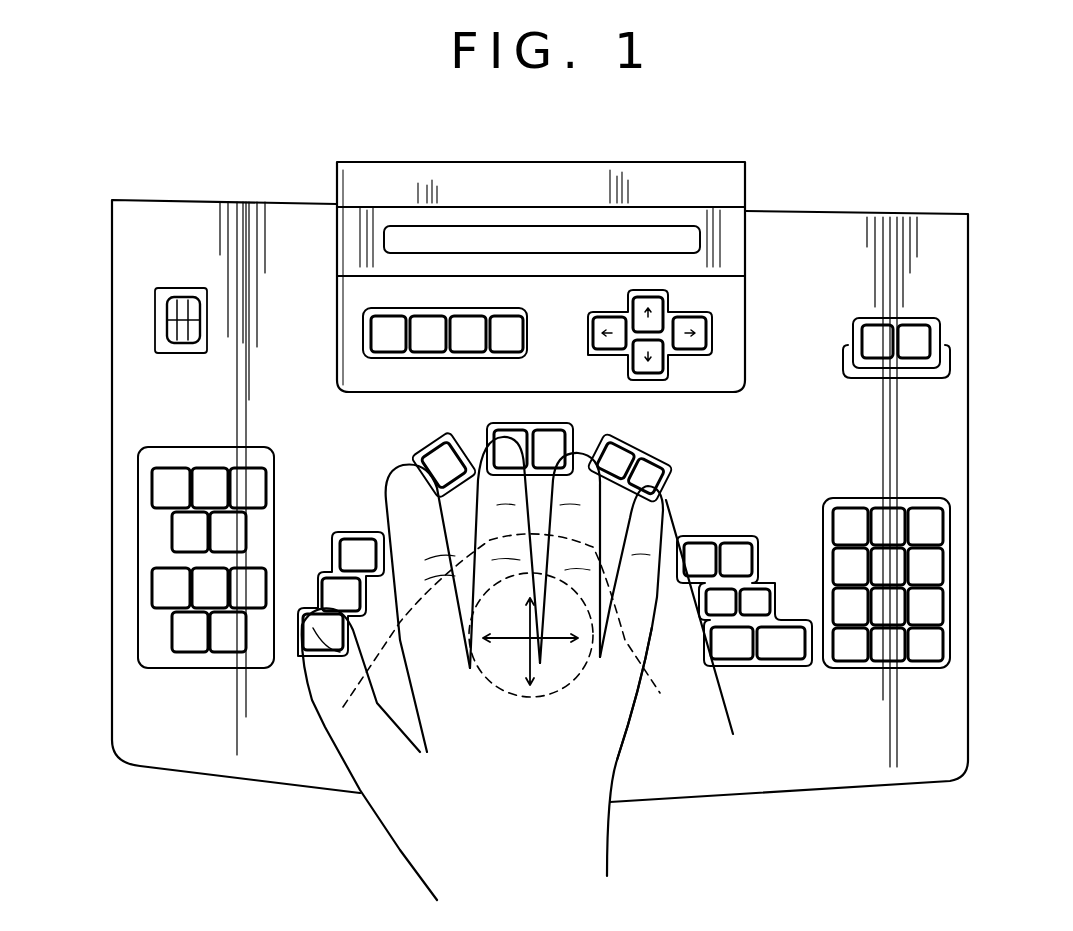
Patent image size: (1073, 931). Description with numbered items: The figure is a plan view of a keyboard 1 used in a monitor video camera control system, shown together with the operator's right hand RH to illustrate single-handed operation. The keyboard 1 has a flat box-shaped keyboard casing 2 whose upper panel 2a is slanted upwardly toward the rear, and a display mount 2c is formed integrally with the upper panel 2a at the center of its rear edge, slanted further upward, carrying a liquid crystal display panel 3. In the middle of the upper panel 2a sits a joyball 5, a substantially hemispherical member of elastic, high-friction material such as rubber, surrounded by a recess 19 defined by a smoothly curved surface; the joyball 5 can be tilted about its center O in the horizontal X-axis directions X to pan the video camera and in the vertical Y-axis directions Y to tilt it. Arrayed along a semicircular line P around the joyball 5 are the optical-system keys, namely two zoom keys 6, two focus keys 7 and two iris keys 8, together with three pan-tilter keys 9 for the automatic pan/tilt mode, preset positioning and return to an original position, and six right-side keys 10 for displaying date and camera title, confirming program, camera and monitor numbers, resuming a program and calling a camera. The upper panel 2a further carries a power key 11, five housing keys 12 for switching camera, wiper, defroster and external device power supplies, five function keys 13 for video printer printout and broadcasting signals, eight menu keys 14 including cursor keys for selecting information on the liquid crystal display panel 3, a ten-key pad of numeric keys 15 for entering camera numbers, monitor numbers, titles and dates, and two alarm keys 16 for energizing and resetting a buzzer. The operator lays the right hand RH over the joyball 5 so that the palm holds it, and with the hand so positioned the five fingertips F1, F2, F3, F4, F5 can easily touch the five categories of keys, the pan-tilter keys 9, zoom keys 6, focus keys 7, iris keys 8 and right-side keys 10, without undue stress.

The keyboard 1 is at (577, 460).
The keyboard casing 2 is at (826, 240).
The upper panel 2a is at (962, 288).
The display mount 2c is at (670, 185).
The liquid crystal display panel 3 is at (571, 240).
The joyball 5 is at (501, 640).
The zoom keys 6 is at (428, 472).
The focus keys 7 is at (553, 430).
The iris keys 8 is at (645, 470).
The pan-tilter keys 9 is at (313, 613).
The right-side keys 10 is at (792, 630).
The power key 11 is at (178, 313).
The housing keys 12 is at (243, 480).
The function keys 13 is at (247, 587).
The menu keys 14 is at (510, 328).
The numeric keys 15 is at (925, 600).
The alarm keys 16 is at (925, 345).
The recess 19 is at (655, 685).
The fingertip F1 is at (315, 662).
The fingertip F2 is at (378, 451).
The fingertip F3 is at (469, 415).
The fingertip F4 is at (599, 426).
The fingertip F5 is at (698, 463).
The semicircular line P is at (711, 569).
The center of the joyball O is at (528, 641).
The X-axis directions X is at (518, 678).
The Y-axis directions Y is at (539, 672).
The right hand RH is at (500, 649).